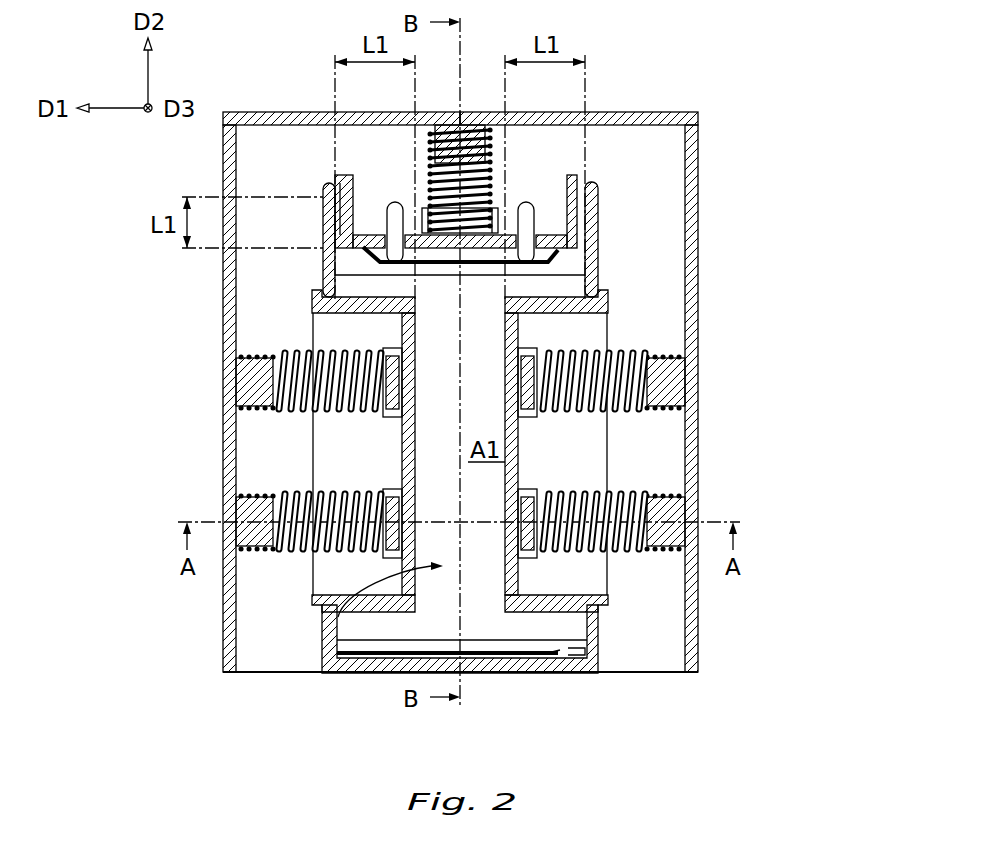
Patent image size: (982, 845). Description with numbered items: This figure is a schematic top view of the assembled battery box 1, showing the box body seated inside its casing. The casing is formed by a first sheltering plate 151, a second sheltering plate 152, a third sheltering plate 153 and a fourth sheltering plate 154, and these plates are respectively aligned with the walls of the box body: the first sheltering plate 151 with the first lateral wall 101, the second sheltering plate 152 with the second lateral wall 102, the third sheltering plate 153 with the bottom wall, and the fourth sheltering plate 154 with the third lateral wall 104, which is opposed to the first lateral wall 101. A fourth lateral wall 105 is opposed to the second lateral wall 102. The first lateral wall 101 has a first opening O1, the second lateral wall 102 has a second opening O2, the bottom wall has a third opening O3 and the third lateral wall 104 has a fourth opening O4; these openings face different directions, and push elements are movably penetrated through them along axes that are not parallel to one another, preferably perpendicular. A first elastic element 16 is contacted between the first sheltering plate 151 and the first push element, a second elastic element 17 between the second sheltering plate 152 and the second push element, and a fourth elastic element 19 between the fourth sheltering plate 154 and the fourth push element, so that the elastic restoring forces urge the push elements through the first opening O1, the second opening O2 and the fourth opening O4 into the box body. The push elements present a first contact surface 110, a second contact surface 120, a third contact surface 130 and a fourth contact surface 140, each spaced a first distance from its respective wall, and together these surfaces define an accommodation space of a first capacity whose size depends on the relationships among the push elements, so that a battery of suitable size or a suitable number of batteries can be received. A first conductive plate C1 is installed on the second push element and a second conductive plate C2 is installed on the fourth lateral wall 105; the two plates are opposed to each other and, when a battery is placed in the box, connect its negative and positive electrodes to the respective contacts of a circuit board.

The battery box 1 is at (842, 42).
The first sheltering plate 151 is at (223, 642).
The second sheltering plate 152 is at (657, 120).
The third sheltering plate 153 is at (260, 135).
The fourth sheltering plate 154 is at (690, 295).
The first lateral wall 101 is at (323, 275).
The second lateral wall 102 is at (340, 183).
The third lateral wall 104 is at (598, 215).
The fourth lateral wall 105 is at (387, 667).
The first contact surface 110 is at (407, 310).
The fourth contact surface 140 is at (520, 305).
The second contact surface 120 is at (489, 268).
The third contact surface 130 is at (338, 617).
The first elastic element 16 is at (277, 377).
The second elastic element 17 is at (487, 130).
The fourth elastic element 19 is at (650, 383).
The first conductive plate C1 is at (390, 200).
The second conductive plate C2 is at (558, 657).
The first opening O1 is at (326, 433).
The second opening O2 is at (558, 170).
The third opening O3 is at (479, 596).
The fourth opening O4 is at (594, 433).